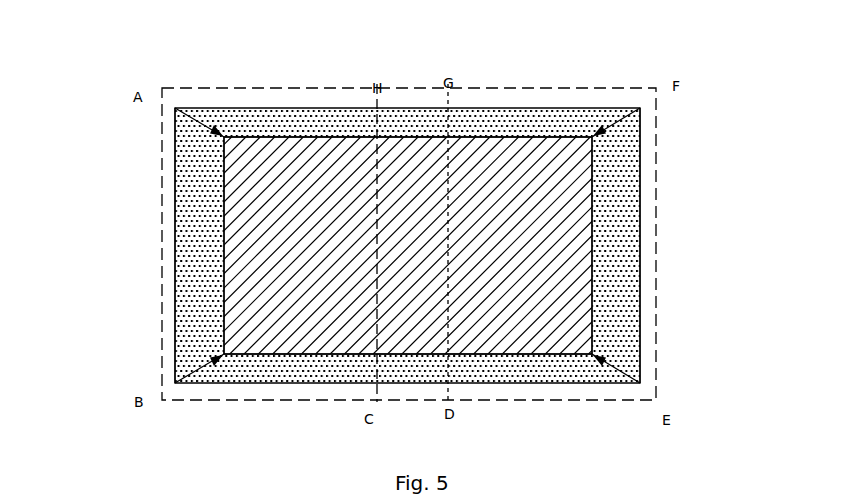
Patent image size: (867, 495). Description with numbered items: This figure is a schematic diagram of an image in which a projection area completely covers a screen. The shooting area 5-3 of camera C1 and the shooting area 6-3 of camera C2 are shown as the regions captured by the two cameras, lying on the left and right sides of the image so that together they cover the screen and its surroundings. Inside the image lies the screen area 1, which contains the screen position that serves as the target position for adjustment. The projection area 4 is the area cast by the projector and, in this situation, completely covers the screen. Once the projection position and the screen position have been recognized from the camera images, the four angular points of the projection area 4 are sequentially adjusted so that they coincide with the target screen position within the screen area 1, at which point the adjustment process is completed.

The screen area 1 is at (410, 199).
The projection area 4 is at (384, 194).
The shooting area of camera C1 5-3 is at (106, 245).
The shooting area of camera C2 6-3 is at (722, 245).